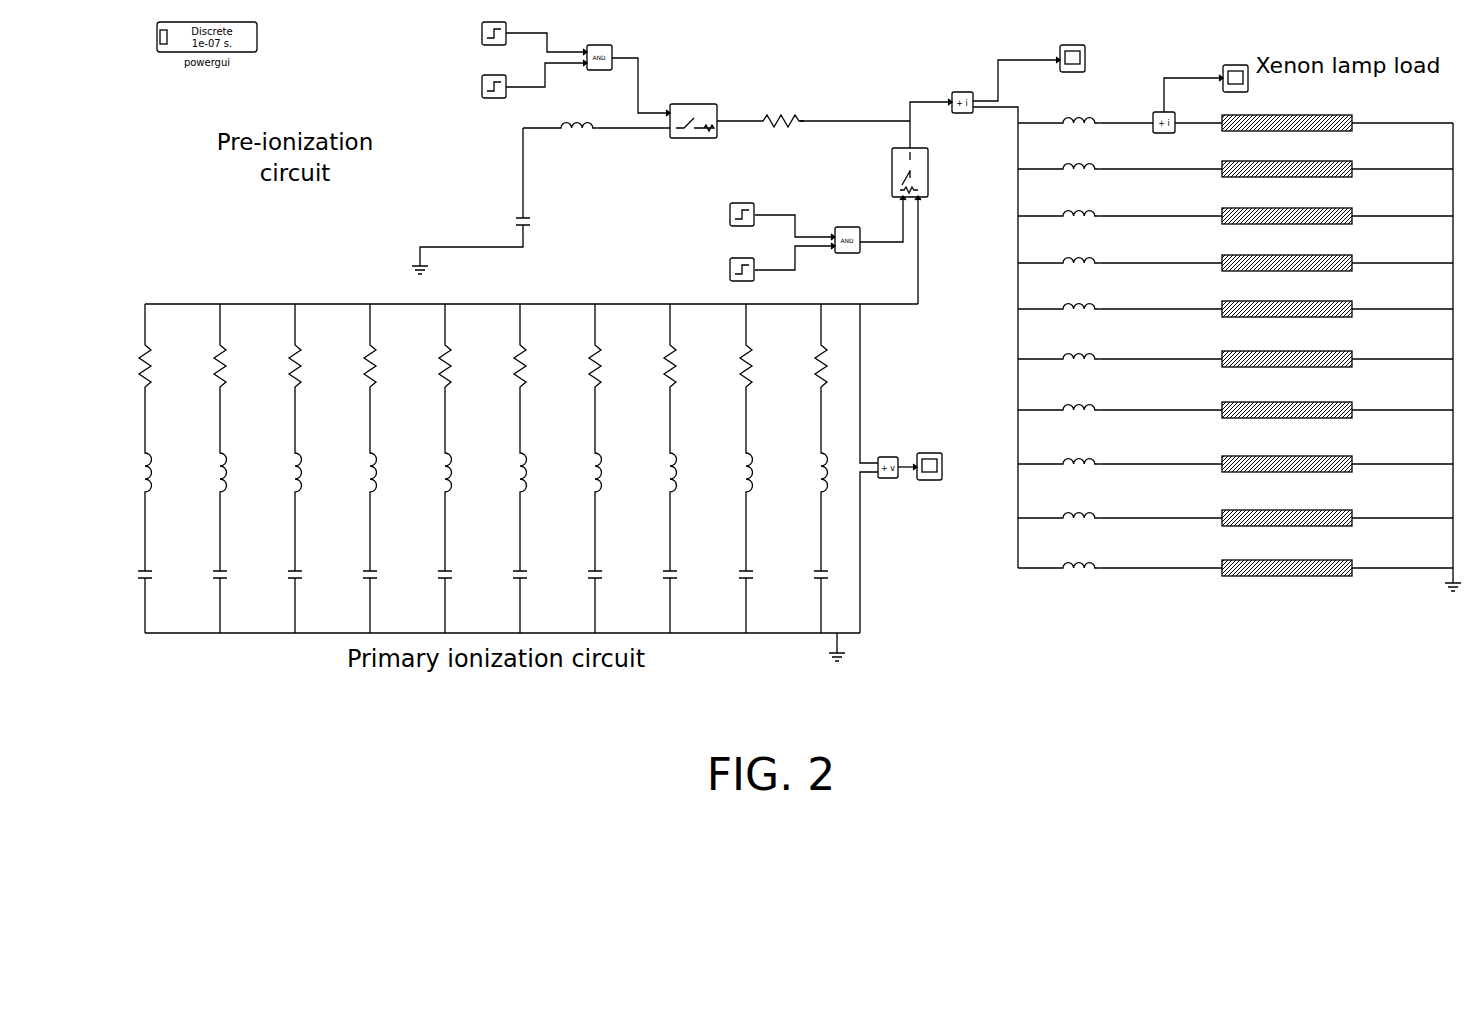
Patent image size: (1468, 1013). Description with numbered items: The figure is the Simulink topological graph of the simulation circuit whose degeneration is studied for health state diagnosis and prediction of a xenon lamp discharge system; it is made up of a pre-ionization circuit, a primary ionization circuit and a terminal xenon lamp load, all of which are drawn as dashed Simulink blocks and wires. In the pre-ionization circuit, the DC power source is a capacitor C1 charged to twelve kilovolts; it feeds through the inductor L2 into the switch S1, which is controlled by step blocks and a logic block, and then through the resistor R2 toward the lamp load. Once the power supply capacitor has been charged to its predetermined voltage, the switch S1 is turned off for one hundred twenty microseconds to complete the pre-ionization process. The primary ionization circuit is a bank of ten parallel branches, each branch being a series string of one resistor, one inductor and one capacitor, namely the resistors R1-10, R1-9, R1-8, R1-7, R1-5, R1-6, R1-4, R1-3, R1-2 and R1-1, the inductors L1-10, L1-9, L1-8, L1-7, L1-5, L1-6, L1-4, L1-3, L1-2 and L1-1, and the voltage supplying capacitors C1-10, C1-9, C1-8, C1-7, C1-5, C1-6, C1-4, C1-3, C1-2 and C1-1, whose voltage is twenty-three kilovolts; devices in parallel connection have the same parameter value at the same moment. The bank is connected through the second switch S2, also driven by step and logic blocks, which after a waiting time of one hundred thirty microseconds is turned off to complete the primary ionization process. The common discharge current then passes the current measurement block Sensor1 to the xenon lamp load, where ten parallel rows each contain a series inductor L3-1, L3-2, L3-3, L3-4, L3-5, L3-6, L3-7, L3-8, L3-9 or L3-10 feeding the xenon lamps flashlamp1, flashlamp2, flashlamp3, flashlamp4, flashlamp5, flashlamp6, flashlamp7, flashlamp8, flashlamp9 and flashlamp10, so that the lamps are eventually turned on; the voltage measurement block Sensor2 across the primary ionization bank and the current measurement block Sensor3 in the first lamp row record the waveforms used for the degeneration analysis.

The switch S1 is at (693, 131).
The switch S2 is at (925, 172).
The pre-ionization inductor L2 is at (577, 143).
The pre-ionization capacitor C1 is at (511, 221).
The pre-ionization resistor R2 is at (781, 135).
The current sensor Sensor1 is at (1073, 68).
The voltage sensor Sensor2 is at (930, 476).
The current sensor Sensor3 is at (1236, 87).
The primary ionization resistor R1-1 is at (802, 363).
The primary ionization resistor R1-2 is at (727, 363).
The primary ionization resistor R1-3 is at (651, 363).
The primary ionization resistor R1-4 is at (576, 363).
The primary ionization resistor R1-5 is at (426, 363).
The primary ionization resistor R1-6 is at (501, 363).
The primary ionization resistor R1-7 is at (351, 363).
The primary ionization resistor R1-8 is at (276, 363).
The primary ionization resistor R1-9 is at (201, 363).
The primary ionization resistor R1-10 is at (122, 363).
The primary ionization inductor L1-1 is at (803, 472).
The primary ionization inductor L1-2 is at (728, 472).
The primary ionization inductor L1-3 is at (652, 472).
The primary ionization inductor L1-4 is at (577, 472).
The primary ionization inductor L1-5 is at (427, 472).
The primary ionization inductor L1-6 is at (502, 472).
The primary ionization inductor L1-7 is at (352, 472).
The primary ionization inductor L1-8 is at (277, 472).
The primary ionization inductor L1-9 is at (202, 472).
The primary ionization inductor L1-10 is at (124, 472).
The primary ionization capacitor C1-1 is at (802, 574).
The primary ionization capacitor C1-2 is at (727, 574).
The primary ionization capacitor C1-3 is at (651, 574).
The primary ionization capacitor C1-4 is at (576, 574).
The primary ionization capacitor C1-5 is at (426, 574).
The primary ionization capacitor C1-6 is at (501, 574).
The primary ionization capacitor C1-7 is at (351, 574).
The primary ionization capacitor C1-8 is at (276, 574).
The primary ionization capacitor C1-9 is at (201, 574).
The primary ionization capacitor C1-10 is at (123, 574).
The lamp series inductor L3-1 is at (1079, 136).
The lamp series inductor L3-2 is at (1079, 182).
The lamp series inductor L3-3 is at (1079, 229).
The lamp series inductor L3-4 is at (1079, 276).
The lamp series inductor L3-5 is at (1079, 322).
The lamp series inductor L3-6 is at (1079, 372).
The lamp series inductor L3-7 is at (1079, 423).
The lamp series inductor L3-8 is at (1079, 477).
The lamp series inductor L3-9 is at (1079, 531).
The lamp series inductor L3-10 is at (1079, 581).
The xenon flashlamp flashlamp1 is at (1287, 132).
The xenon flashlamp flashlamp2 is at (1287, 178).
The xenon flashlamp flashlamp3 is at (1287, 225).
The xenon flashlamp flashlamp4 is at (1287, 272).
The xenon flashlamp flashlamp5 is at (1287, 318).
The xenon flashlamp flashlamp6 is at (1287, 368).
The xenon flashlamp flashlamp7 is at (1287, 419).
The xenon flashlamp flashlamp8 is at (1287, 473).
The xenon flashlamp flashlamp9 is at (1287, 527).
The xenon flashlamp flashlamp10 is at (1287, 577).